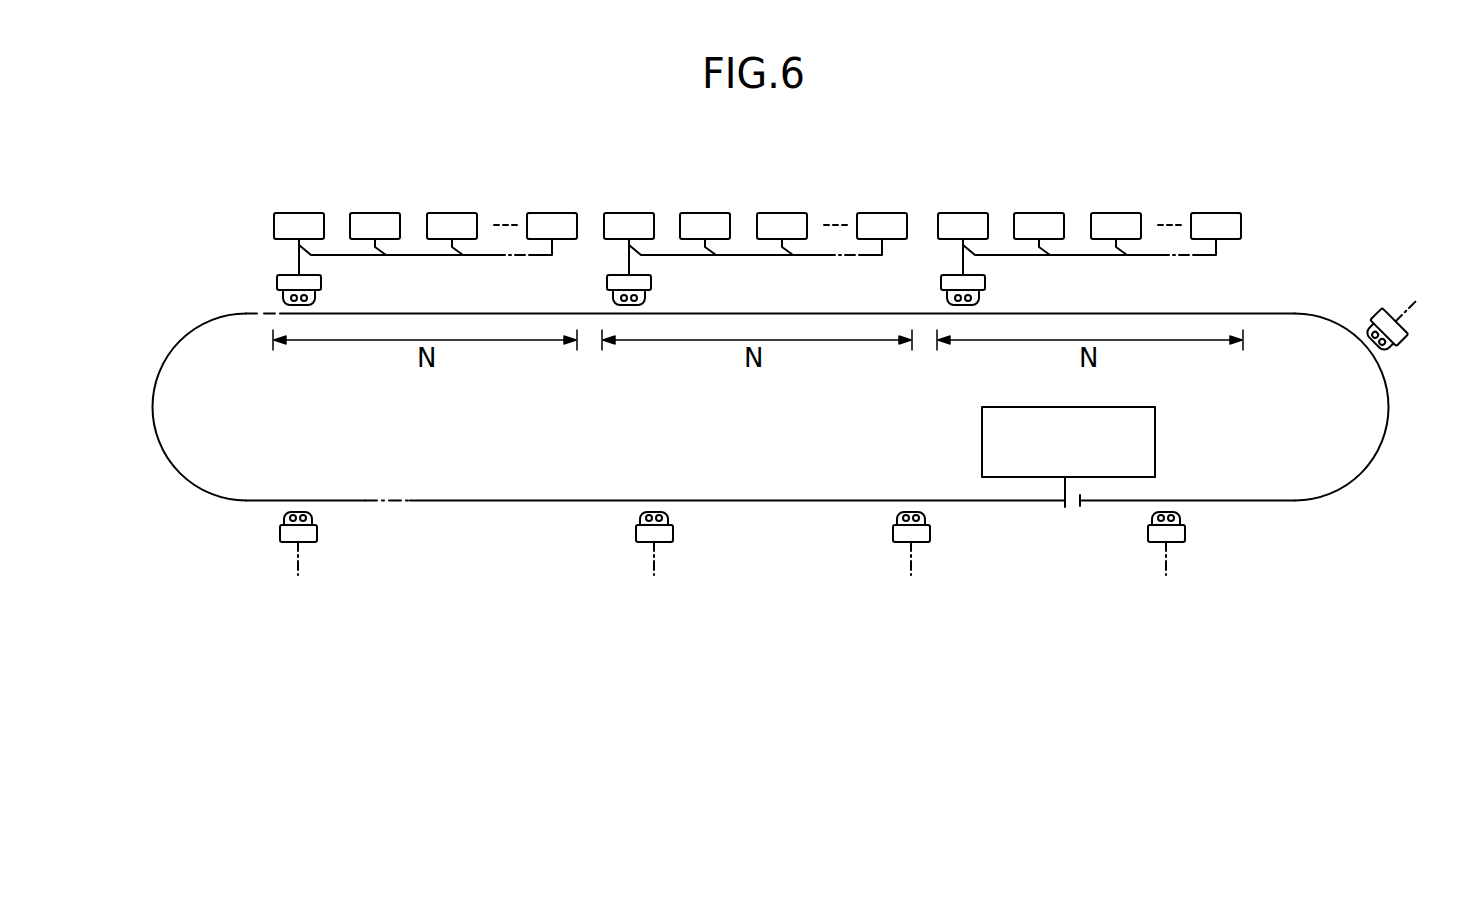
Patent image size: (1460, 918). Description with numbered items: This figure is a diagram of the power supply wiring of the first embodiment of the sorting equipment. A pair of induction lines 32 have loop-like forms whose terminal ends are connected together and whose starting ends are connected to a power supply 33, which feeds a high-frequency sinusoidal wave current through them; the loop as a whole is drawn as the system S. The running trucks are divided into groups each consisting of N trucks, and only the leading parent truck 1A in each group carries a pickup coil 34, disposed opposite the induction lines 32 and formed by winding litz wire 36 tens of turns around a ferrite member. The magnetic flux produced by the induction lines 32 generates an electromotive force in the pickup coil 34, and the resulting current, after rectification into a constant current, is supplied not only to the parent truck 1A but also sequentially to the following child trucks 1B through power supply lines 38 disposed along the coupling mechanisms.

The parent truck 1A is at (284, 225).
The child trucks 1B is at (388, 232).
The induction lines 32 is at (814, 499).
The power supply 33 is at (1156, 440).
The pickup coil 34 is at (272, 281).
The litz wire 36 is at (318, 297).
The power supply lines 38 is at (349, 256).
The conveyor system loop S is at (1393, 432).